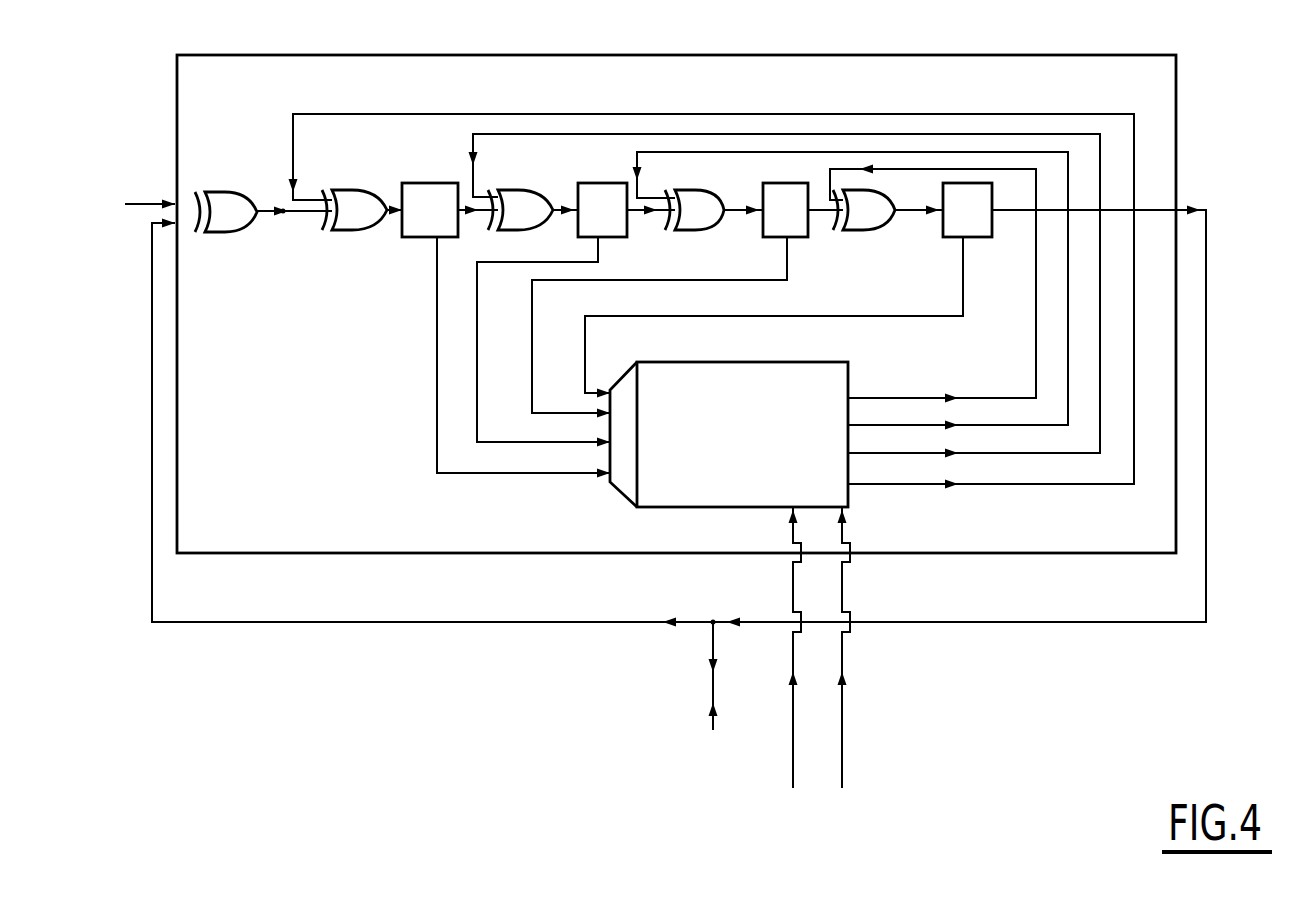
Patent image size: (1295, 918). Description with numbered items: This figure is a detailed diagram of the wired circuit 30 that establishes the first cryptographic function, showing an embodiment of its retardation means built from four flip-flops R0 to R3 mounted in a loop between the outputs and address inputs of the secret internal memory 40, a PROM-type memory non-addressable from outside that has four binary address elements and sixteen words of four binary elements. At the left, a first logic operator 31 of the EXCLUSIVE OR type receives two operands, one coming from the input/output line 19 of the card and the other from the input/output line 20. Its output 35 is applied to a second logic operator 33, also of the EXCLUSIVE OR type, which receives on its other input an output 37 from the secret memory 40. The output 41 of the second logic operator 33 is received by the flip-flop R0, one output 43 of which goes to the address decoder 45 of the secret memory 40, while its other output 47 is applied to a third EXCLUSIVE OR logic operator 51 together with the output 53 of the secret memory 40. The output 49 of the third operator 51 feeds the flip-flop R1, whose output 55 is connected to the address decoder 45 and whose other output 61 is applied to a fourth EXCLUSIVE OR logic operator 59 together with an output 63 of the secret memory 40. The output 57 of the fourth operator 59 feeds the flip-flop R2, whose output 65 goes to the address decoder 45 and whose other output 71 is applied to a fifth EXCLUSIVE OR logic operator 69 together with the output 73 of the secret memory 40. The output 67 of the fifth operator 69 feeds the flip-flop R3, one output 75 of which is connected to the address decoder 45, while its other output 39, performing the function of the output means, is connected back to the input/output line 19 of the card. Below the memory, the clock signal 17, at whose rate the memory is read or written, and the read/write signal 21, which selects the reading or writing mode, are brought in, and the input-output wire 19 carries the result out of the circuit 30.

The clock signal 17 is at (793, 742).
The input-output wire 19 is at (711, 680).
The input/output line 20 is at (140, 200).
The read/write signal 21 is at (843, 722).
The wired circuit 30 is at (894, 53).
The first logic operator 31 is at (238, 194).
The second logic operator 33 is at (346, 232).
The output of the first operator 35 is at (283, 216).
The output from the secret memory 37 is at (346, 114).
The other output of the flip-flop R3 39 is at (1206, 345).
The secret internal memory 40 is at (805, 362).
The output of the second logic operator 41 is at (392, 204).
The output of the flip-flop R0 43 is at (430, 340).
The address decoder 45 is at (618, 496).
The other output of the flip-flop R0 47 is at (468, 195).
The output of the third logic operator 49 is at (560, 198).
The third logic operator 51 is at (522, 191).
The output of the secret memory 53 is at (616, 134).
The output of the flip-flop R1 55 is at (478, 340).
The output of the fourth logic operator 57 is at (736, 198).
The fourth logic operator 59 is at (695, 230).
The register r1 output 61 is at (641, 215).
The output of the secret memory 63 is at (804, 152).
The output of the flip-flop R2 65 is at (531, 340).
The output of the fifth logic operator 67 is at (928, 212).
The fifth logic operator 69 is at (868, 230).
The register r2 output 71 is at (812, 230).
The output of the secret memory 73 is at (933, 169).
The output of the flip-flop R3 75 is at (963, 272).